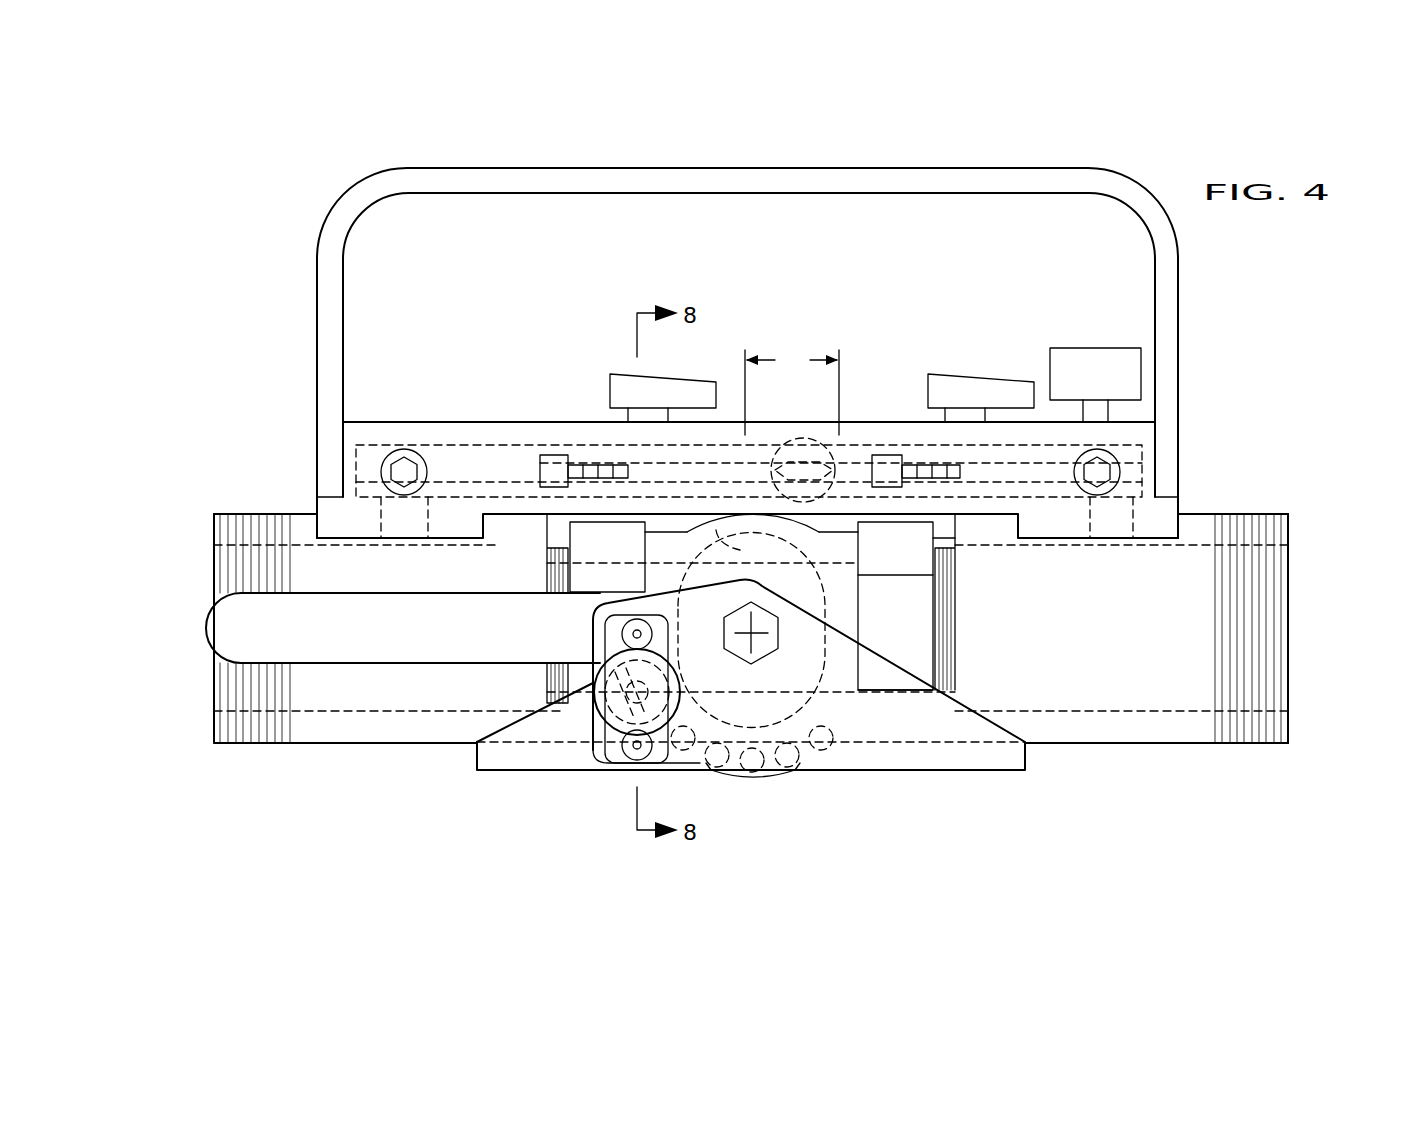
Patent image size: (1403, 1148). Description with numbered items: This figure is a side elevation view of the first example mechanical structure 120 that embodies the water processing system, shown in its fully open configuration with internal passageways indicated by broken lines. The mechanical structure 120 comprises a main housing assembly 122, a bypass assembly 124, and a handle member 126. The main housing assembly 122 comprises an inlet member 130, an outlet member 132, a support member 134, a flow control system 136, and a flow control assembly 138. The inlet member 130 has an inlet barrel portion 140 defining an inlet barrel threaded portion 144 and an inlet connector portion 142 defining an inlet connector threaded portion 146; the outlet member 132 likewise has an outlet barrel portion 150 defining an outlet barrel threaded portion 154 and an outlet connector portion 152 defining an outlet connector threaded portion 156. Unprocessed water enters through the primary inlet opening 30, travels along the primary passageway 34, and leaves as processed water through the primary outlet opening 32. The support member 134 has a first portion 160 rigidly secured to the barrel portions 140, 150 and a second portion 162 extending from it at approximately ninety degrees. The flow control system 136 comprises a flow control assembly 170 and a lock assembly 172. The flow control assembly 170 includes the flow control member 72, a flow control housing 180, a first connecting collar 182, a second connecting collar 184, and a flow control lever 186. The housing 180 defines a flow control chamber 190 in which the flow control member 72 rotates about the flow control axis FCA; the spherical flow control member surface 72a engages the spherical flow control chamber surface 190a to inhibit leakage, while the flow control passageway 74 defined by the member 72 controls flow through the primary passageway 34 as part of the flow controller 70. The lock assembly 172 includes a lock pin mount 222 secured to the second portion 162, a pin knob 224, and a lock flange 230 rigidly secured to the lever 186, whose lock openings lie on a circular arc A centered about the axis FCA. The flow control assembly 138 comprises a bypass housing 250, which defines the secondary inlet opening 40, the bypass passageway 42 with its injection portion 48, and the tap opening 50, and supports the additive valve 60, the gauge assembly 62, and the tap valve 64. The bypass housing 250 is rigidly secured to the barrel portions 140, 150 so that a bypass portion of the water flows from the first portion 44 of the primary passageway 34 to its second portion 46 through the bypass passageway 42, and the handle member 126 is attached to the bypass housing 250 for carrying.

The handle member 126 is at (1004, 181).
The first example mechanical structure 120 is at (1236, 349).
The main housing assembly 122 is at (1241, 506).
The bypass assembly 124 is at (438, 408).
The bypass housing 250 is at (513, 433).
The bypass passageway 42 is at (470, 463).
The secondary inlet opening 40 is at (630, 470).
The tap opening 50 is at (962, 470).
The additive valve 60 is at (624, 381).
The tap valve 64 is at (965, 393).
The gauge assembly 62 is at (1075, 355).
The injection portion 48 is at (792, 391).
The flow control housing 180 is at (757, 517).
The first example flow controller 70 is at (833, 524).
The flow control assembly 170 is at (848, 524).
The flow control member 72 is at (740, 550).
The flow control member surface 72a is at (716, 530).
The second connecting collar 184 is at (572, 533).
The outlet connector portion 152 is at (553, 580).
The outlet connector threaded portion 156 is at (546, 681).
The first connecting collar 182 is at (915, 533).
The inlet connector portion 142 is at (943, 635).
The inlet connector threaded portion 146 is at (947, 655).
The second portion 162 is at (883, 677).
The flow control chamber surface 190a is at (808, 588).
The flow control chamber 190 is at (808, 596).
The flow control passageway 74 is at (808, 604).
The flow control assembly 138 is at (937, 781).
The flow control system 136 is at (934, 805).
The support member 134 is at (495, 772).
The first portion 160 is at (513, 760).
The flow control axis FCA is at (742, 634).
The pin knob 224 is at (600, 763).
The lock pin mount 222 is at (606, 766).
The lock assembly 172 is at (581, 709).
The circular arc A is at (853, 710).
The lock flange 230 is at (752, 777).
The flow control lever 186 is at (231, 630).
The primary outlet opening 32 is at (213, 576).
The outlet member 132 is at (303, 750).
The outlet barrel threaded portion 154 is at (233, 690).
The primary passageway 34 is at (380, 693).
The outlet barrel portion 150 is at (345, 744).
The second portion 46 is at (397, 586).
The primary inlet opening 30 is at (1290, 592).
The inlet barrel threaded portion 144 is at (1270, 642).
The inlet member 130 is at (1190, 754).
The inlet barrel portion 140 is at (1122, 725).
The first portion 44 is at (1126, 640).